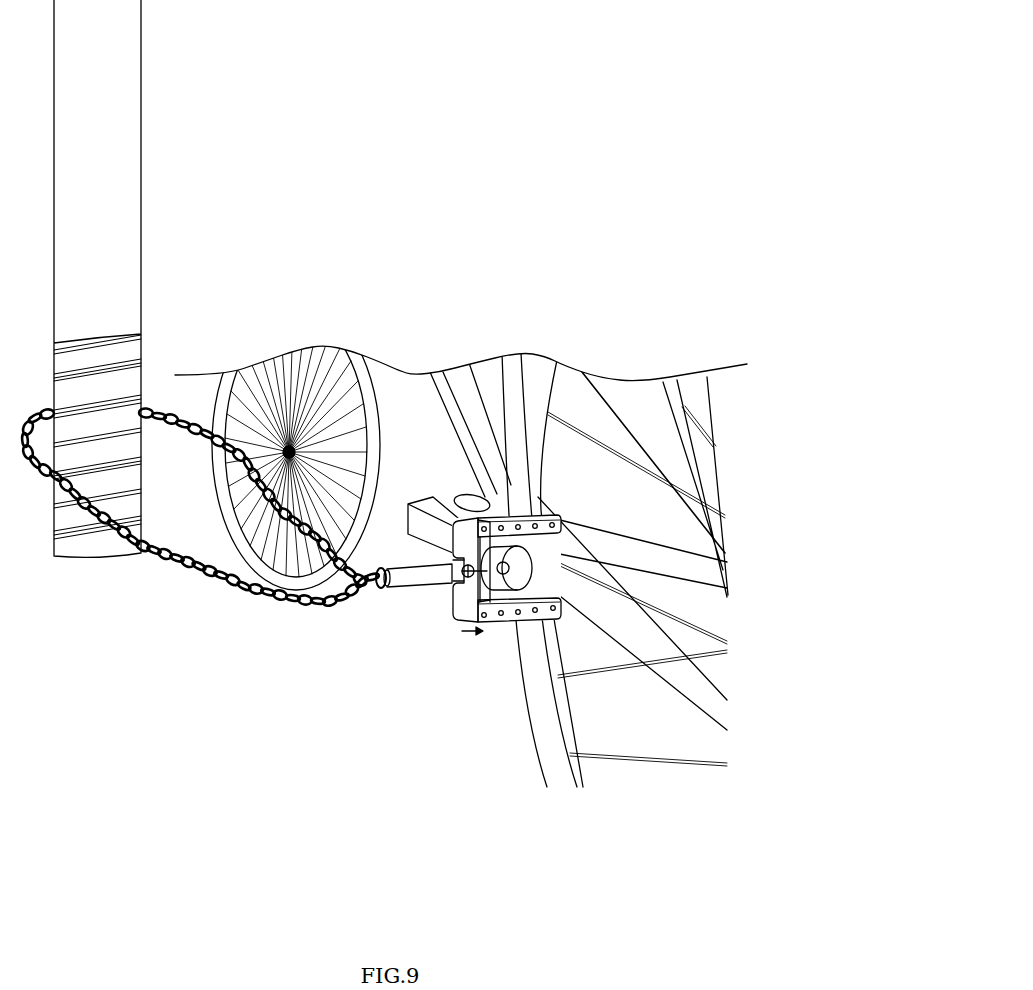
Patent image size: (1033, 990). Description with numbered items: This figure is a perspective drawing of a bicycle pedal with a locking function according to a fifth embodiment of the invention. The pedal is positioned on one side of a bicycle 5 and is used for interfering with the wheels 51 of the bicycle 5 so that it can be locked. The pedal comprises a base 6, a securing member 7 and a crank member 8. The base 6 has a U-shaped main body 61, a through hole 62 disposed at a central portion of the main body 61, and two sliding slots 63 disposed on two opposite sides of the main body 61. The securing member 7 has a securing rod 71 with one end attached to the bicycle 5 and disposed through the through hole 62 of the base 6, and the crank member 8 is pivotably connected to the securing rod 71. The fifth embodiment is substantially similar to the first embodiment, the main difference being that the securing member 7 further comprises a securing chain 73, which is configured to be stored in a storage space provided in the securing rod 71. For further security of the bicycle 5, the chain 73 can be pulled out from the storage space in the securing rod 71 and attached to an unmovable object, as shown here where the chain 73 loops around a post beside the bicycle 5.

The bicycle 5 is at (434, 544).
The wheels 51 is at (545, 717).
The base 6 is at (464, 632).
The main body 61 is at (507, 612).
The through hole 62 is at (452, 588).
The sliding slots 63 is at (562, 627).
The securing member 7 is at (236, 543).
The securing rod 71 is at (400, 588).
The securing chain 73 is at (160, 562).
The crank member 8 is at (431, 490).